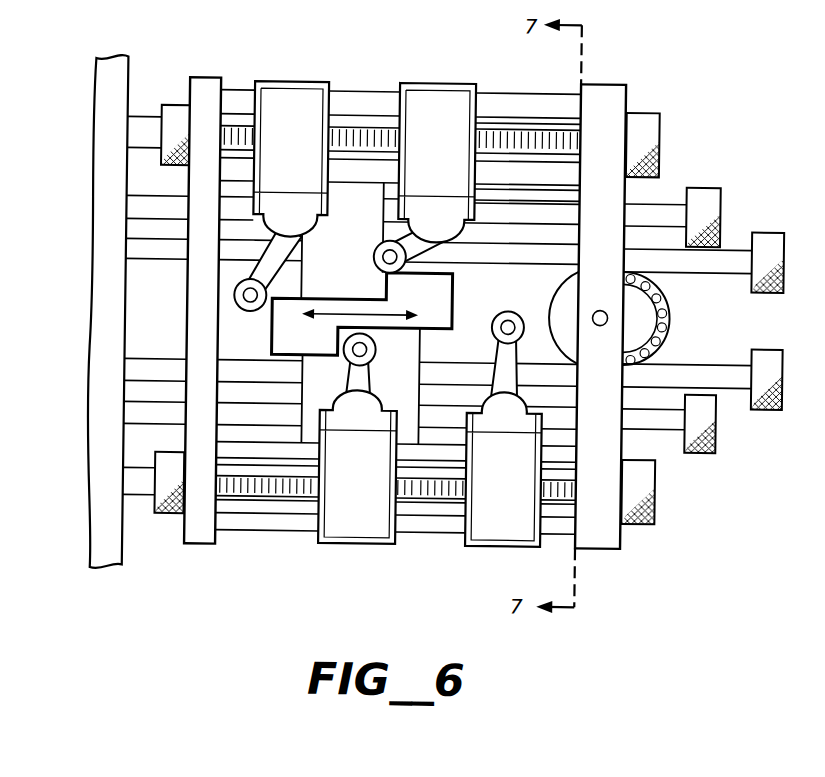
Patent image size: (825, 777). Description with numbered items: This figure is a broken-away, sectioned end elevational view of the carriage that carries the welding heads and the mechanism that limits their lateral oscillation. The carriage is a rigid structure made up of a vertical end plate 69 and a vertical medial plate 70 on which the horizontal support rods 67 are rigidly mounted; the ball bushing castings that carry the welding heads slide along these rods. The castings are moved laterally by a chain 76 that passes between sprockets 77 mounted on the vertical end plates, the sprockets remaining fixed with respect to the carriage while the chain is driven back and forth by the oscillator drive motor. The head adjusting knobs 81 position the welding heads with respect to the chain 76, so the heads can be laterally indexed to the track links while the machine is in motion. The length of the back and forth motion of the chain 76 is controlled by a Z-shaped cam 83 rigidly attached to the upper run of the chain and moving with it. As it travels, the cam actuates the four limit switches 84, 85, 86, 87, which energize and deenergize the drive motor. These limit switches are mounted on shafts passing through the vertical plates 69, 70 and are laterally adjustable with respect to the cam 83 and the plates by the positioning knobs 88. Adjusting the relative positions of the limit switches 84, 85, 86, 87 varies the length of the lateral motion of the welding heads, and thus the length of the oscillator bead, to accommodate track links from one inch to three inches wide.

The horizontal support rods 67 is at (135, 137).
The vertical end plate 69 is at (606, 550).
The vertical medial plate 70 is at (205, 540).
The chain 76 is at (665, 302).
The sprockets 77 is at (638, 330).
The head adjusting knobs 81 is at (719, 201).
The Z-shaped cam 83 is at (453, 300).
The limit switch 84 is at (438, 88).
The limit switch 85 is at (497, 528).
The limit switch 86 is at (292, 88).
The limit switch 87 is at (357, 530).
The positioning knobs 88 is at (652, 130).